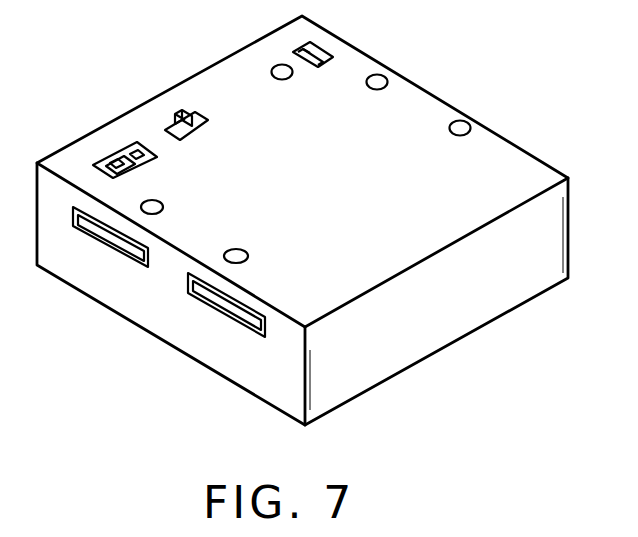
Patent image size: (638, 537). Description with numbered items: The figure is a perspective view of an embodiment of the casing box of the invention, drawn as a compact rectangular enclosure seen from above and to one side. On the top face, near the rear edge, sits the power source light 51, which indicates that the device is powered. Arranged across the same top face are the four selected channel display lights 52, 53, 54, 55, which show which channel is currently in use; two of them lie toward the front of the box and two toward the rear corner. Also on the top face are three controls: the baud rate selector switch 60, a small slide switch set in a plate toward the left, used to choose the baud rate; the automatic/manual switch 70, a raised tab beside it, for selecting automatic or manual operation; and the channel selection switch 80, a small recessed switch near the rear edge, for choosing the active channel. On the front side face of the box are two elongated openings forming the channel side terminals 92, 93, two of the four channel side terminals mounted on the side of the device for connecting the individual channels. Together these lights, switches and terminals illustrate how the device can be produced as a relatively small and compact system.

The power source light 51 is at (272, 66).
The selected channel display light 52 is at (162, 204).
The selected channel display light 53 is at (244, 250).
The selected channel display light 54 is at (466, 120).
The selected channel display light 55 is at (388, 76).
The baud rate selector switch 60 is at (113, 158).
The automatic/manual switch 70 is at (166, 128).
The channel selection switch 80 is at (331, 53).
The channel side terminal 92 is at (93, 236).
The channel side terminal 93 is at (208, 304).